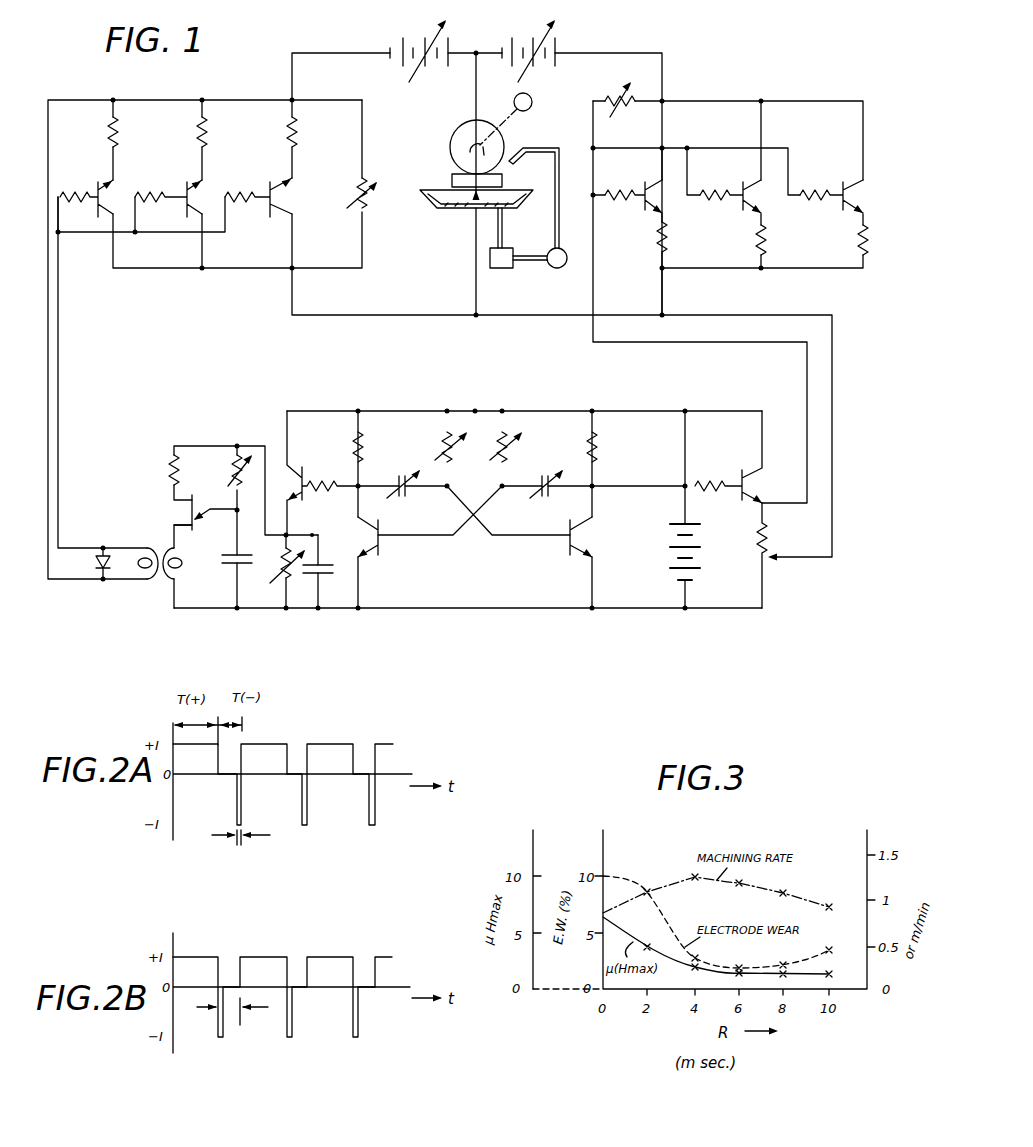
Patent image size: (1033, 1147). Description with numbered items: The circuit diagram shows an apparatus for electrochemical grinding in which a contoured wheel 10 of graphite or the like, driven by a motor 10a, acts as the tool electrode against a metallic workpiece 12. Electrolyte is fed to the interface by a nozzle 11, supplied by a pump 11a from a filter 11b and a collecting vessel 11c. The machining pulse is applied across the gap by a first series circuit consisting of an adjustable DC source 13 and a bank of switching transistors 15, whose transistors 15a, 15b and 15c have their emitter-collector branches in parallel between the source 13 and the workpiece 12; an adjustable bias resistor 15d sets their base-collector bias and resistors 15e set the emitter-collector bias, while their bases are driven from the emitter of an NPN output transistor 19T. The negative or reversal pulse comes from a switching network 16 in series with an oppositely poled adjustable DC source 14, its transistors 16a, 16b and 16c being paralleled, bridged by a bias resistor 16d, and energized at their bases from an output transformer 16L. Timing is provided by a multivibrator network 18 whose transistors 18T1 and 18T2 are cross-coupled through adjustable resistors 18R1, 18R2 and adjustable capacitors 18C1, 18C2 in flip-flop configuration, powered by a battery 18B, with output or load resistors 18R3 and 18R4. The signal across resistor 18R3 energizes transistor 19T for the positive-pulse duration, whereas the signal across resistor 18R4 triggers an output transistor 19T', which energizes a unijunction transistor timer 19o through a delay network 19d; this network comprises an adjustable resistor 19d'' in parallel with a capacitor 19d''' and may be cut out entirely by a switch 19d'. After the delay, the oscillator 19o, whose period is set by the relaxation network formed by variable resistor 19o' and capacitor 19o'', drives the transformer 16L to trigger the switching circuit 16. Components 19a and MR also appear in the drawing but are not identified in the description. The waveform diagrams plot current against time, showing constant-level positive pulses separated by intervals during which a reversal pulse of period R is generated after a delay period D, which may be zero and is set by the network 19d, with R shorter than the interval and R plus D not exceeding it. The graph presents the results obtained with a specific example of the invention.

In FIG. 1, the contoured wheel 10 is at (462, 130).
In FIG. 1, the motor 10a is at (533, 101).
In FIG. 1, the nozzle 11 is at (520, 150).
In FIG. 1, the pump 11a is at (560, 270).
In FIG. 1, the filter 11b is at (503, 250).
In FIG. 1, the collecting vessel 11c is at (435, 210).
In FIG. 1, the metallic workpiece 12 is at (448, 178).
In FIG. 1, the adjustable DC source 13 is at (558, 46).
In FIG. 1, the adjustable DC source 14 is at (404, 42).
In FIG. 1, the bank of switching transistors 15 is at (866, 124).
In FIG. 1, the switching transistor 15a is at (642, 206).
In FIG. 1, the switching transistor 15b is at (753, 202).
In FIG. 1, the switching transistor 15c is at (838, 182).
In FIG. 1, the adjustable bias resistor 15d is at (605, 94).
In FIG. 1, the resistors 15e is at (668, 245).
In FIG. 1, the switching network 16 is at (232, 98).
In FIG. 1, the transistor 16a is at (96, 185).
In FIG. 1, the transistor 16b is at (184, 185).
In FIG. 1, the transistor 16c is at (274, 185).
In FIG. 1, the bias resistor 16d is at (366, 172).
In FIG. 1, the output transformer 16L is at (158, 552).
In FIG. 1, the multivibrator network 18 is at (486, 610).
In FIG. 1, the adjustable resistor 18R1 is at (505, 426).
In FIG. 1, the adjustable resistor 18R2 is at (444, 412).
In FIG. 1, the output or load resistor 18R3 is at (598, 442).
In FIG. 1, the output or load resistor 18R4 is at (356, 428).
In FIG. 1, the adjustable capacitor 18C1 is at (545, 498).
In FIG. 1, the adjustable capacitor 18C2 is at (404, 498).
In FIG. 1, the transistor 18T1 is at (382, 552).
In FIG. 1, the transistor 18T2 is at (574, 552).
In FIG. 1, the battery 18B is at (672, 546).
In FIG. 1, the output transistor 19T is at (743, 440).
In FIG. 1, the variable resistor MR is at (779, 555).
In FIG. 1, the unijunction transistor timer 19o is at (243, 545).
In FIG. 1, the oscillator transistor 19a is at (198, 500).
In FIG. 1, the variable resistor 19o' is at (228, 448).
In FIG. 1, the capacitor 19o'' is at (218, 571).
In FIG. 1, the output transistor 19T' is at (322, 473).
In FIG. 1, the delay network 19d is at (316, 588).
In FIG. 1, the switch 19d' is at (310, 533).
In FIG. 1, the adjustable resistor 19d'' is at (272, 598).
In FIG. 1, the capacitor 19d''' is at (336, 544).
In FIG. 2A, the reversal pulse period R is at (240, 843).
In FIG. 2B, the delay period D is at (232, 1011).